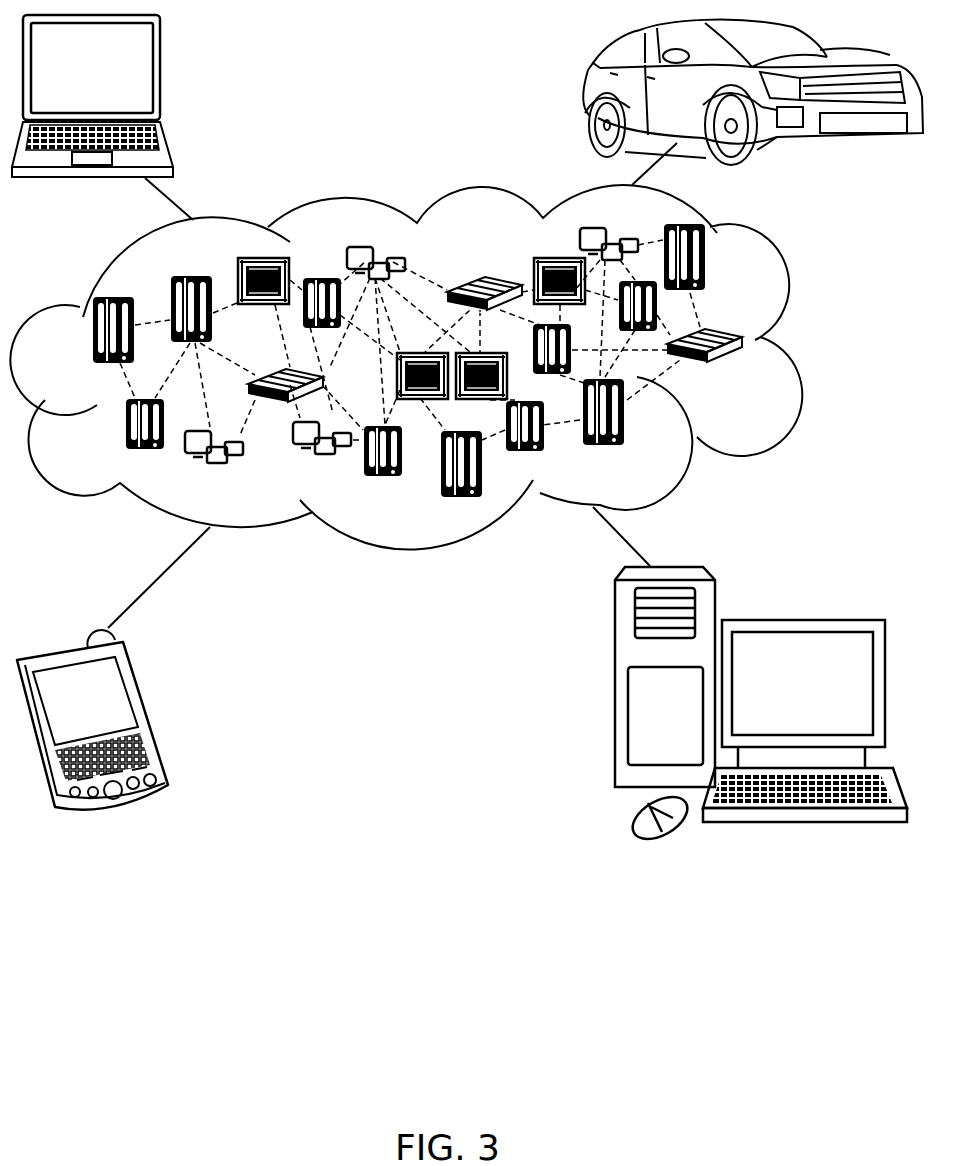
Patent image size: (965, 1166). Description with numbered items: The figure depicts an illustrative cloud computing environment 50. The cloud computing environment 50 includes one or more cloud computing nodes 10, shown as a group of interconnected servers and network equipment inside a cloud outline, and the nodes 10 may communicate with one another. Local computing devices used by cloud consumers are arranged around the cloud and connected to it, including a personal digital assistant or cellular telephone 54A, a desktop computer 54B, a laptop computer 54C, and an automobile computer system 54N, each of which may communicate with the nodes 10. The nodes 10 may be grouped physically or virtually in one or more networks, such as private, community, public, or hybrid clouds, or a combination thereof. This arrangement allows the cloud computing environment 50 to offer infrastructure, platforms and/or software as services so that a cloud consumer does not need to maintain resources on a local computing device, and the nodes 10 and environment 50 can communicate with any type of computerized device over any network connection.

The cloud computing nodes 10 is at (748, 372).
The cloud computing environment 50 is at (800, 342).
The personal digital assistant (PDA) or cellular telephone 54A is at (150, 710).
The desktop computer 54B is at (800, 620).
The laptop computer 54C is at (158, 78).
The automobile computer system 54N is at (587, 98).